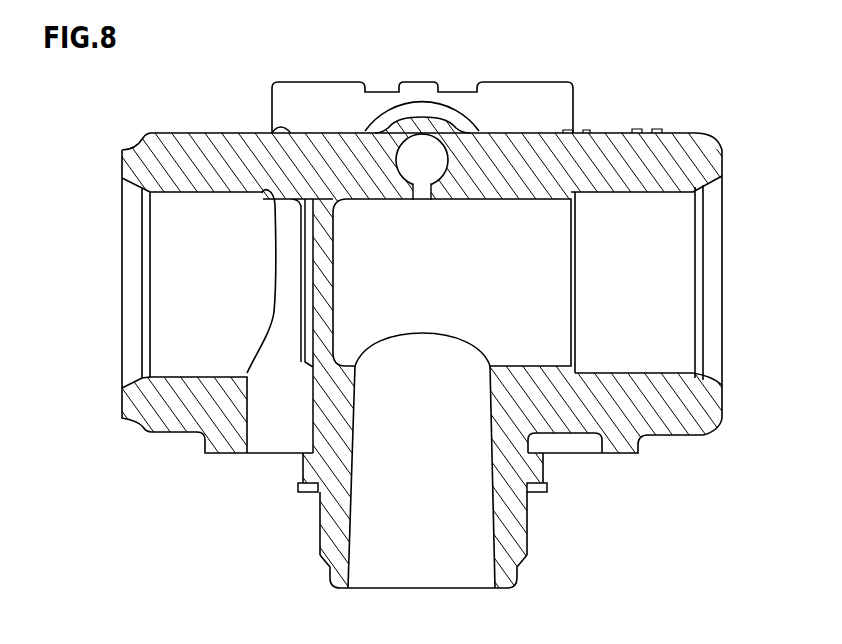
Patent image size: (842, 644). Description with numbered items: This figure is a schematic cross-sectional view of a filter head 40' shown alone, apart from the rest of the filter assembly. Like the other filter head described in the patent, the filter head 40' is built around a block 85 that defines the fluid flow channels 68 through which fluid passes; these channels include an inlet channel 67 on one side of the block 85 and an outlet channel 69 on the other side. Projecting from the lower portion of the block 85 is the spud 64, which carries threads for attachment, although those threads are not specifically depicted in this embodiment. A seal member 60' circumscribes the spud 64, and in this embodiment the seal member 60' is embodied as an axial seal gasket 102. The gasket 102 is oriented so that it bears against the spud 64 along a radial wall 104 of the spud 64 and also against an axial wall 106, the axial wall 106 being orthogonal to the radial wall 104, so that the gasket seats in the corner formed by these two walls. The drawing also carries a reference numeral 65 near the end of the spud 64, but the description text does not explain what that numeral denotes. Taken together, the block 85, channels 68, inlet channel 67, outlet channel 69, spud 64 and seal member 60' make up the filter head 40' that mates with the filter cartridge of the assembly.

The filter head 40' is at (422, 243).
The block 85 is at (197, 132).
The fluid flow channels 68 is at (182, 192).
The inlet channel 67 is at (170, 377).
The outlet channel 69 is at (682, 192).
The axial seal gasket 102 is at (547, 488).
The seal member 60' is at (287, 507).
The axial wall 106 is at (318, 486).
The radial wall 104 is at (320, 523).
The spud 64 is at (527, 515).
The neck end 65 is at (527, 547).